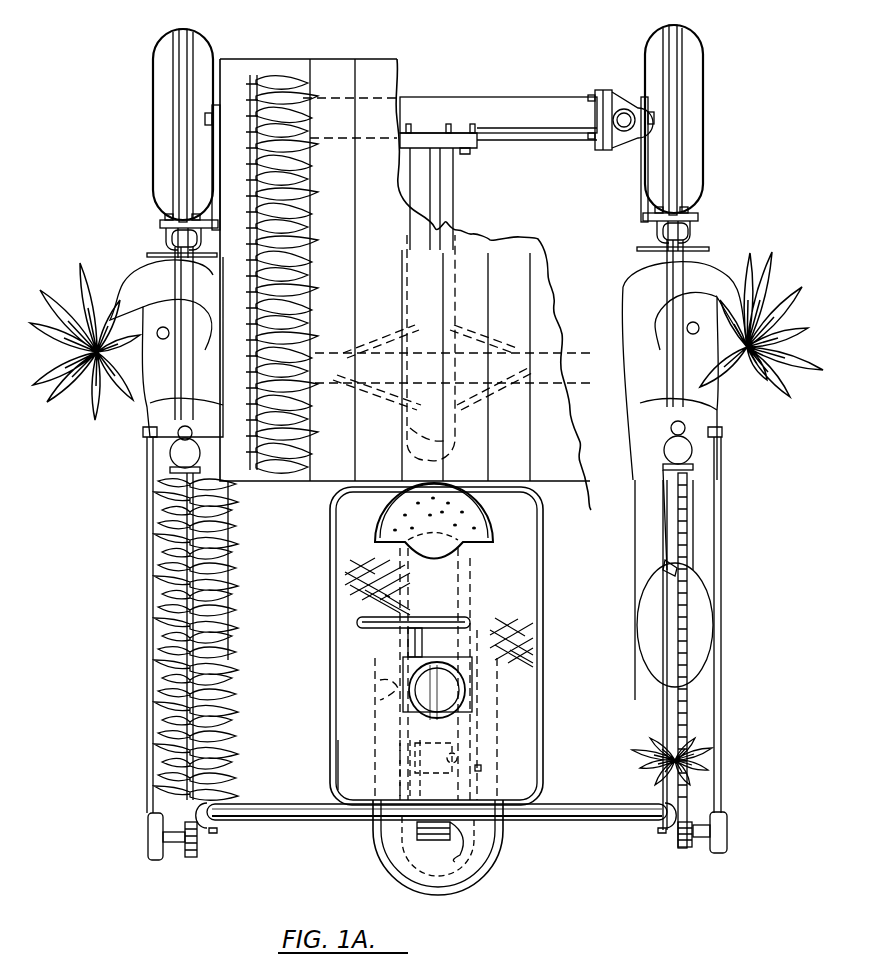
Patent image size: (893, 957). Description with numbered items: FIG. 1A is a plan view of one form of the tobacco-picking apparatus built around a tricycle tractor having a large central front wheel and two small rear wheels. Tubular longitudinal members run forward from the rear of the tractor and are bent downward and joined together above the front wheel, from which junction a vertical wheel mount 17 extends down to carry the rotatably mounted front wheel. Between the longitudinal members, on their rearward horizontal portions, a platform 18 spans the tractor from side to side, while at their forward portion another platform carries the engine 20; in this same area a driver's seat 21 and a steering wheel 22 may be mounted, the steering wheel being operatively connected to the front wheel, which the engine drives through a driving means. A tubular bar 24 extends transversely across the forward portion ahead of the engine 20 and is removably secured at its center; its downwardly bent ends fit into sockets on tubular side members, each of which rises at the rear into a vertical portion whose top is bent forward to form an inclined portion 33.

The vertical wheel mount 17 is at (440, 208).
The platform 18 is at (320, 62).
The engine 20 is at (483, 762).
The driver's seat 21 is at (385, 528).
The steering wheel 22 is at (357, 623).
The tubular bar 24 is at (617, 802).
The inclined portion 33 is at (677, 298).